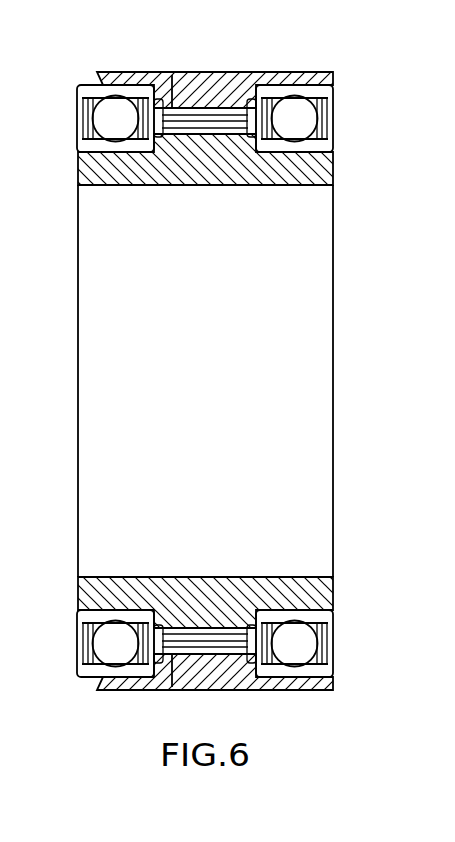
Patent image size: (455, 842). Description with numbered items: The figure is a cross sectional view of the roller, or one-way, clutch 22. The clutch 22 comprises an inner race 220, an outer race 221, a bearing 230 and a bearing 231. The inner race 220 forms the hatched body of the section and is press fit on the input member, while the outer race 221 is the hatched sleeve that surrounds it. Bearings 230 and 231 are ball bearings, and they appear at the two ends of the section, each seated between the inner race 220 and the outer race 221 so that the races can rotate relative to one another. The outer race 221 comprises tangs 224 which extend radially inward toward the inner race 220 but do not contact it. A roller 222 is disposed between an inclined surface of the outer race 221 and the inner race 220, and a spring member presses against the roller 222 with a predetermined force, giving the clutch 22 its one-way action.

The clutch 22 is at (221, 367).
The inner race 220 is at (333, 170).
The outer race 221 is at (249, 72).
The roller 222 is at (172, 75).
The tangs 224 is at (184, 78).
The bearing 230 is at (297, 647).
The bearing 231 is at (110, 641).